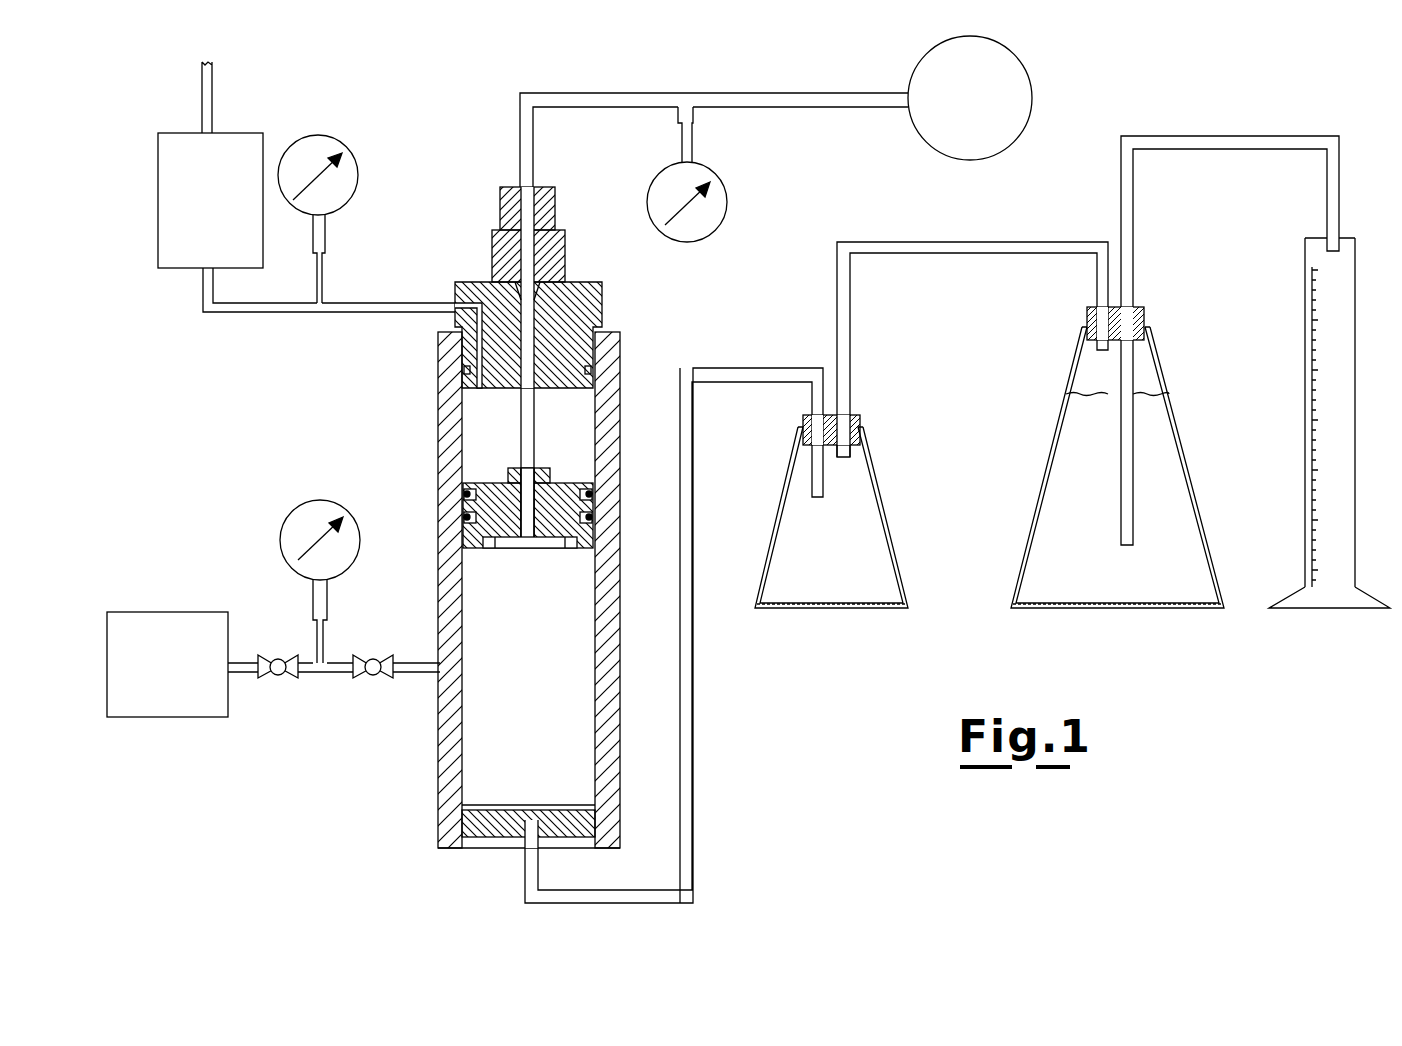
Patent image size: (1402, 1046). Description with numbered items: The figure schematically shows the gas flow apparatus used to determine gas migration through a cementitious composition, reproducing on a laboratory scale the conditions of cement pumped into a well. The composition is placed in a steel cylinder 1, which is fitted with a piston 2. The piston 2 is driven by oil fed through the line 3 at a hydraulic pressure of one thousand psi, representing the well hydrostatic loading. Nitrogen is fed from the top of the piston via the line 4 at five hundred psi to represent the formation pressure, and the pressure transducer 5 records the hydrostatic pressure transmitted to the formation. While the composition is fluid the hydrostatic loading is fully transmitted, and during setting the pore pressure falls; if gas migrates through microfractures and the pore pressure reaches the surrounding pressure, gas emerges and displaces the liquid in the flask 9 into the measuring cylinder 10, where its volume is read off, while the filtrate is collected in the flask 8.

The steel cylinder 1 is at (445, 418).
The piston 2 is at (551, 525).
The line 3 is at (369, 303).
The line 4 is at (607, 101).
The pressure transducer 5 is at (331, 672).
The flask 8 is at (815, 585).
The flask 9 is at (1123, 585).
The measuring cylinder 10 is at (1345, 508).